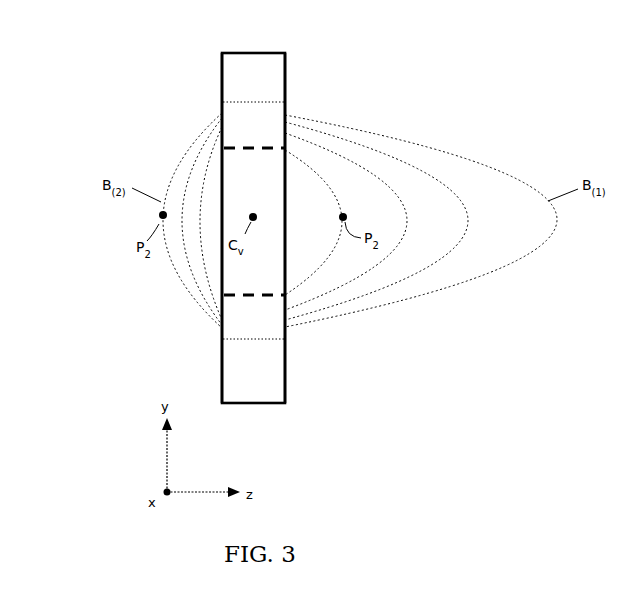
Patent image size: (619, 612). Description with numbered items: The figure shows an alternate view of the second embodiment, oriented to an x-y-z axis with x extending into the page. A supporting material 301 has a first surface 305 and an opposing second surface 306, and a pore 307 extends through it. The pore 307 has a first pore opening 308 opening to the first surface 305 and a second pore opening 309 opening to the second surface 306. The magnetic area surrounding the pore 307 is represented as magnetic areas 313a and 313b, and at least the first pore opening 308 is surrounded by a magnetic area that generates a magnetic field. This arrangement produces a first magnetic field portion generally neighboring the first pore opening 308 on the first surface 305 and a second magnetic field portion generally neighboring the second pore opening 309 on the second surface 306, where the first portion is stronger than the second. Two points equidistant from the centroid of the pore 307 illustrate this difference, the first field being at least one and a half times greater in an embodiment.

The supporting material 301 is at (257, 77).
The first surface 305 is at (285, 87).
The second surface 306 is at (222, 88).
The pore 307 is at (258, 265).
The first pore opening 308 is at (286, 222).
The second pore opening 309 is at (220, 207).
The magnetic area 313a is at (268, 123).
The magnetic area 313b is at (265, 320).